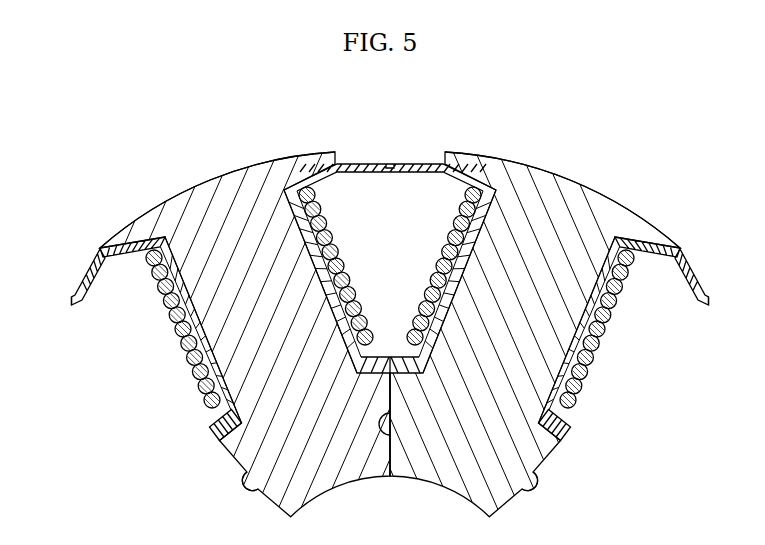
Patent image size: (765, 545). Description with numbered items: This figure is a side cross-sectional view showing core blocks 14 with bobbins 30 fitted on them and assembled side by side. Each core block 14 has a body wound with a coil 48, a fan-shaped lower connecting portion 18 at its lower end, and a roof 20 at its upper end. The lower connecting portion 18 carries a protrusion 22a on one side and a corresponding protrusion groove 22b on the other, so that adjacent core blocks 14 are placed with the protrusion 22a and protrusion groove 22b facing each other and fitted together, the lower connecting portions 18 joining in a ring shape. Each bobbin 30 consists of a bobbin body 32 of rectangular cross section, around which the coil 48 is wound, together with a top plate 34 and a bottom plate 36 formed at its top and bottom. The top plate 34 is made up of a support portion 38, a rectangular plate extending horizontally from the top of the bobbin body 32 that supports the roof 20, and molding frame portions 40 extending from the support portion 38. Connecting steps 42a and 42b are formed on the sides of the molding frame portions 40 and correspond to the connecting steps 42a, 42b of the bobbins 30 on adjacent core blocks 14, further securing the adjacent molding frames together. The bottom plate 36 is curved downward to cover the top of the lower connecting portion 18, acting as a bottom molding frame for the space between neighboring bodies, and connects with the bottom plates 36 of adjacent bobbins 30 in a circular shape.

The core block 14 is at (568, 167).
The lower connecting portion 18 is at (307, 402).
The roof 20 is at (215, 178).
The protrusion 22a is at (246, 489).
The protrusion groove 22b is at (534, 489).
The bobbin 30 is at (636, 320).
The bobbin body 32 is at (613, 302).
The top plate 34 is at (674, 264).
The bottom plate 36 is at (572, 438).
The support portion 38 is at (660, 252).
The molding frame portion 40 is at (696, 285).
The connecting step 42a is at (72, 305).
The connecting step 42b is at (708, 305).
The coil 48 is at (600, 345).